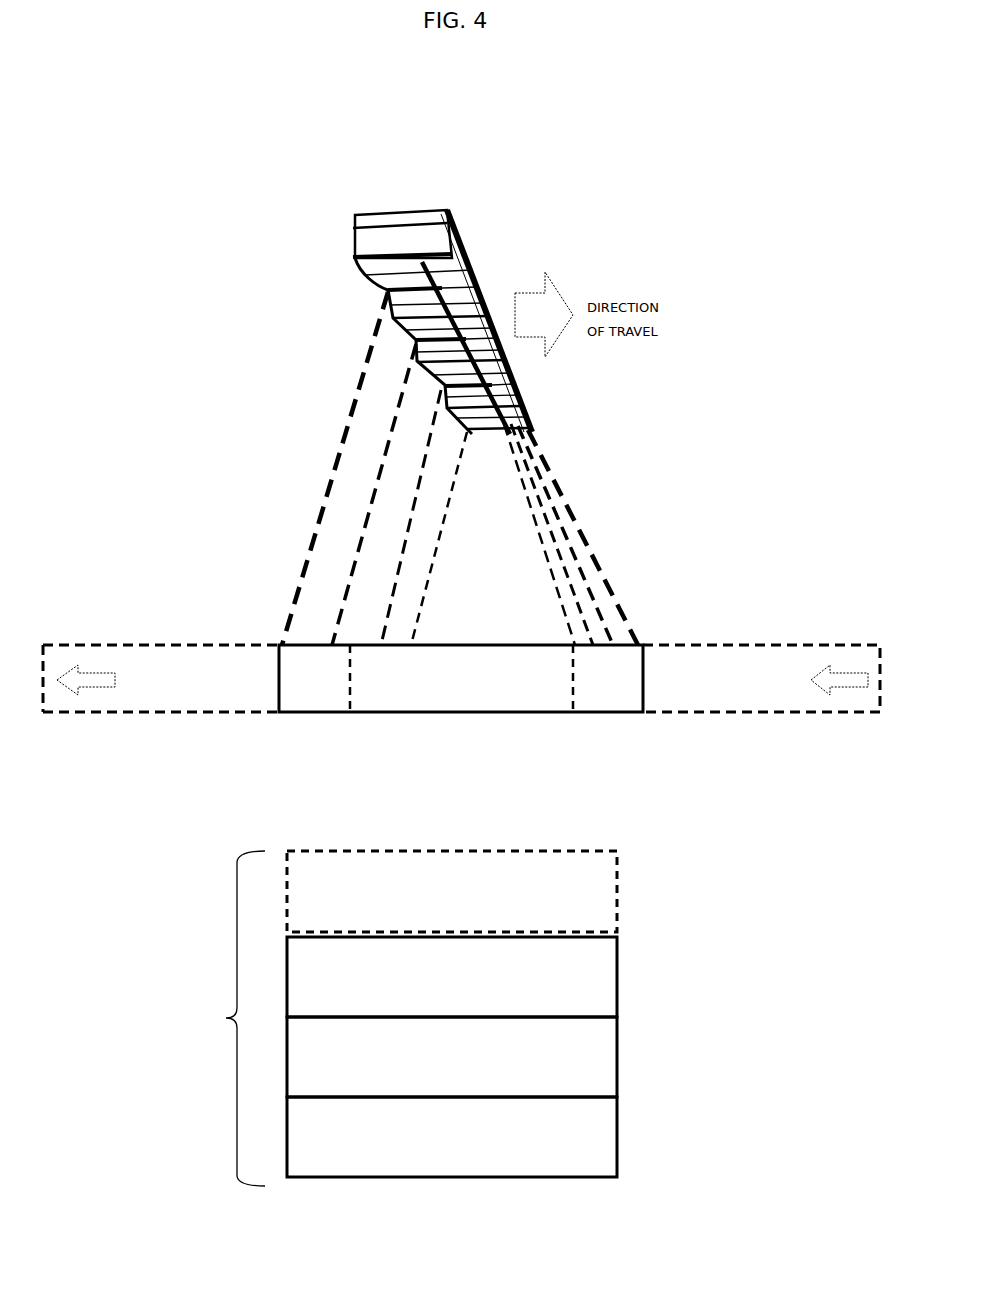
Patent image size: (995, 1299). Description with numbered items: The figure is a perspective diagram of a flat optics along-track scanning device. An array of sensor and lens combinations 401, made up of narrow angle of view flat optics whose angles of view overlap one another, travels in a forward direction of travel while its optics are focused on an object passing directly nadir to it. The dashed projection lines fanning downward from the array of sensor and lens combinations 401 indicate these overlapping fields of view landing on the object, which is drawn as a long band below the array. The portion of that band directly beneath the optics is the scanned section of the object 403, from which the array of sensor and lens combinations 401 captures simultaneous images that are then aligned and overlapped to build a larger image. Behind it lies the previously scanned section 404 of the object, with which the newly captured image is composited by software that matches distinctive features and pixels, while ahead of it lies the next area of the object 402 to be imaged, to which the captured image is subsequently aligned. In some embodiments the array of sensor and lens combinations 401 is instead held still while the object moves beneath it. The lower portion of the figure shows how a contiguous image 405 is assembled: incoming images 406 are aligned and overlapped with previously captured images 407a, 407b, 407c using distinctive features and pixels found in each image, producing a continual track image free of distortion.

The array of sensor and lens combinations 401 is at (424, 197).
The next area of the object to be imaged 402 is at (747, 688).
The scanned section of the object 403 is at (460, 692).
The previously scanned section 404 is at (170, 688).
The contiguous image 405 is at (232, 1018).
The incoming images 406 is at (452, 891).
The previously captured image 407a is at (452, 977).
The previously captured image 407b is at (452, 1057).
The previously captured image 407c is at (452, 1137).